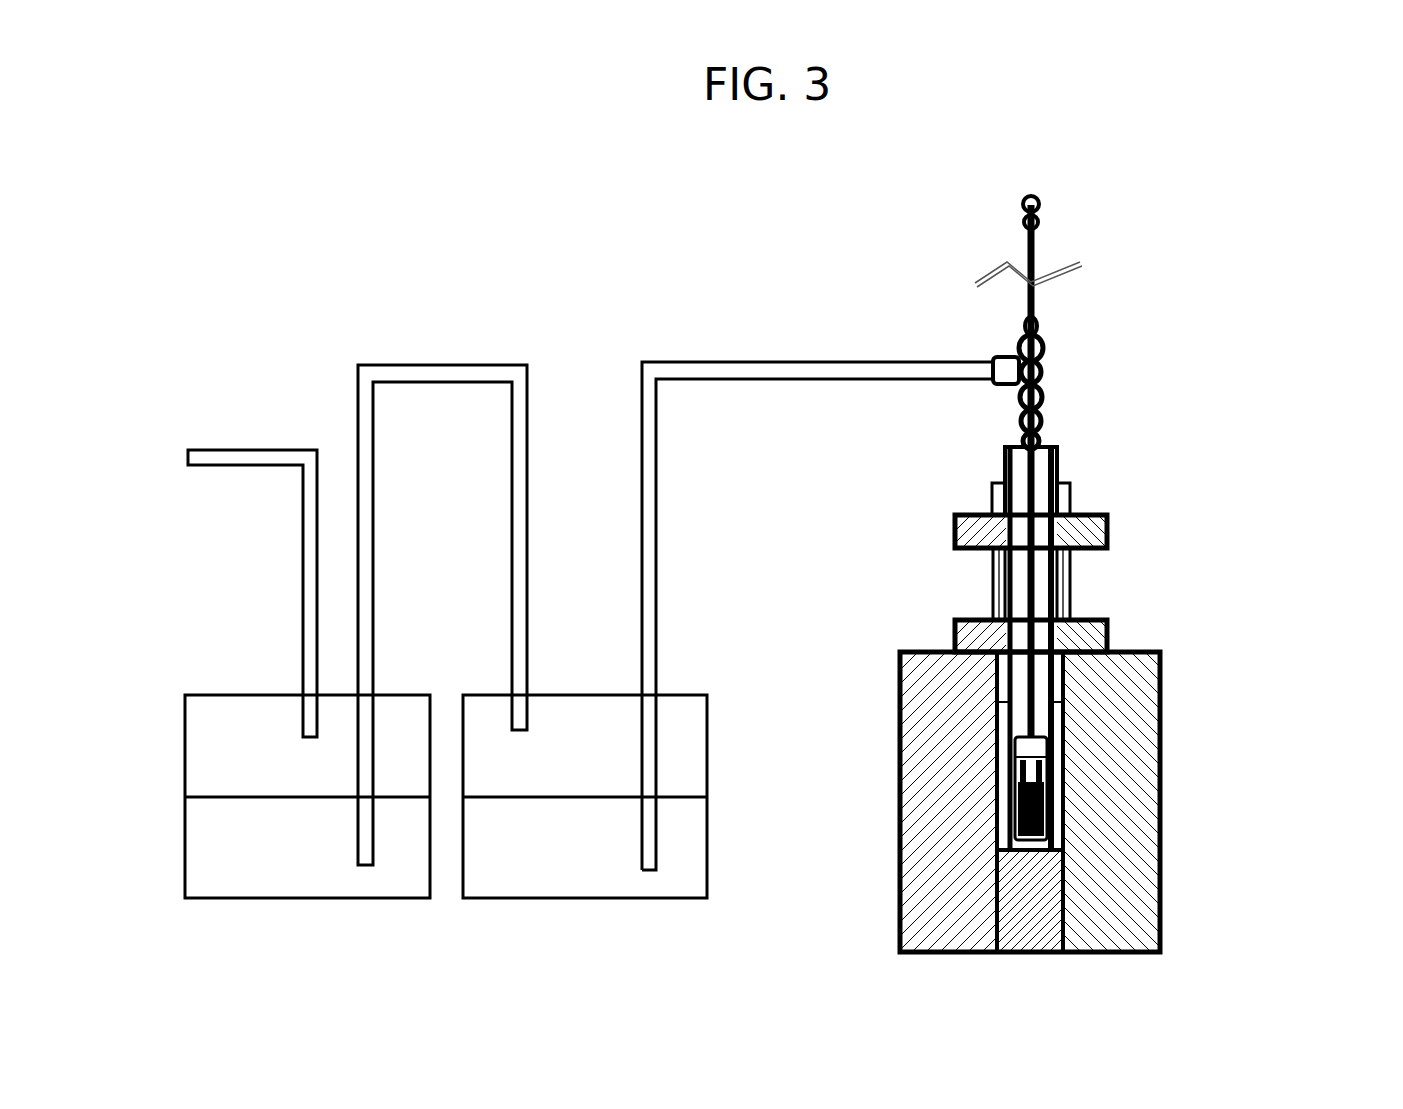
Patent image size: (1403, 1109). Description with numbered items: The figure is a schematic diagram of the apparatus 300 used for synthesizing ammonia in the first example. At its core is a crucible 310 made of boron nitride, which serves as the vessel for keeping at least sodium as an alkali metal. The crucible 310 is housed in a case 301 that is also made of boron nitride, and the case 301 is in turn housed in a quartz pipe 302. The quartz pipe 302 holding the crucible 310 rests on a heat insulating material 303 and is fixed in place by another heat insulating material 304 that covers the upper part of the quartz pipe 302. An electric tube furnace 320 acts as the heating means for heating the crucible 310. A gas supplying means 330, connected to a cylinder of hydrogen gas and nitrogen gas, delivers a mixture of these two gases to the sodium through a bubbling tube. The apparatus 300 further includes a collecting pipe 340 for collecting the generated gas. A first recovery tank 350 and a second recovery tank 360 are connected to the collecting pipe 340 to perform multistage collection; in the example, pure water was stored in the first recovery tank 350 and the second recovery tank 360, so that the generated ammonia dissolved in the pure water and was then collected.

The apparatus 300 is at (637, 231).
The case 301 is at (1065, 815).
The quartz pipe 302 is at (1157, 648).
The heat insulating material 303 is at (1023, 910).
The heat insulating material 304 is at (953, 630).
The crucible 310 is at (1050, 785).
The electric tube furnace 320 is at (935, 775).
The gas supplying means 330 is at (1022, 250).
The collecting pipe 340 is at (808, 363).
The first recovery tank 350 is at (645, 898).
The second recovery tank 360 is at (313, 898).